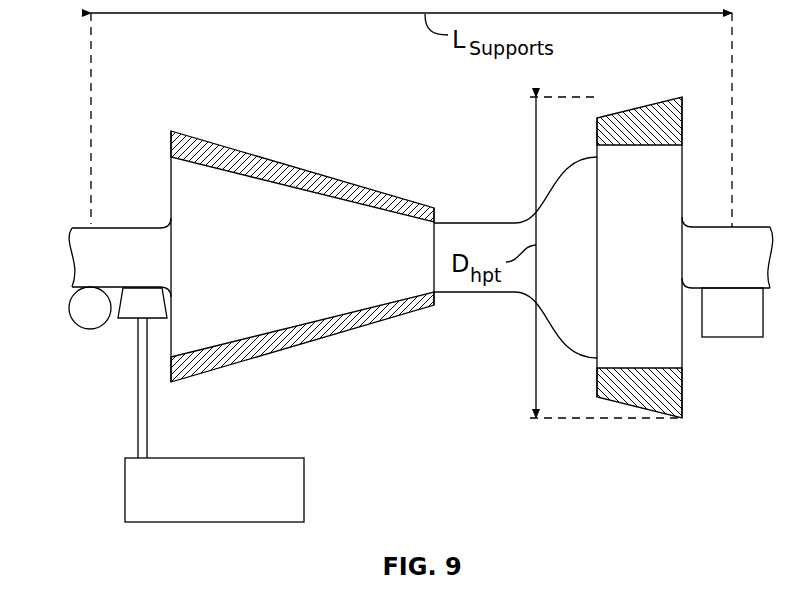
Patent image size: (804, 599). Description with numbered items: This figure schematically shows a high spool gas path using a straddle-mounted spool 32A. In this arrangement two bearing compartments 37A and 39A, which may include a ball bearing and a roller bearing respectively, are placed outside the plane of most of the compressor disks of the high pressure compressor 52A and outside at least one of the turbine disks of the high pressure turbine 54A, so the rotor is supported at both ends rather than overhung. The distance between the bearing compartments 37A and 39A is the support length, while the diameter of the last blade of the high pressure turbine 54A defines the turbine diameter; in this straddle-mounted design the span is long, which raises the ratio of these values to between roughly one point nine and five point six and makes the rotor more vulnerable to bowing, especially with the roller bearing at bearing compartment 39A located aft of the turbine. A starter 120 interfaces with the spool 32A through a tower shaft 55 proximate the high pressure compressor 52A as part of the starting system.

The straddle-mounted spool 32A is at (513, 208).
The bearing compartment 37A is at (87, 331).
The bearing compartment 39A is at (736, 337).
The high pressure compressor 52A is at (317, 310).
The high pressure turbine 54A is at (597, 323).
The tower shaft 55 is at (148, 418).
The starter 120 is at (304, 490).